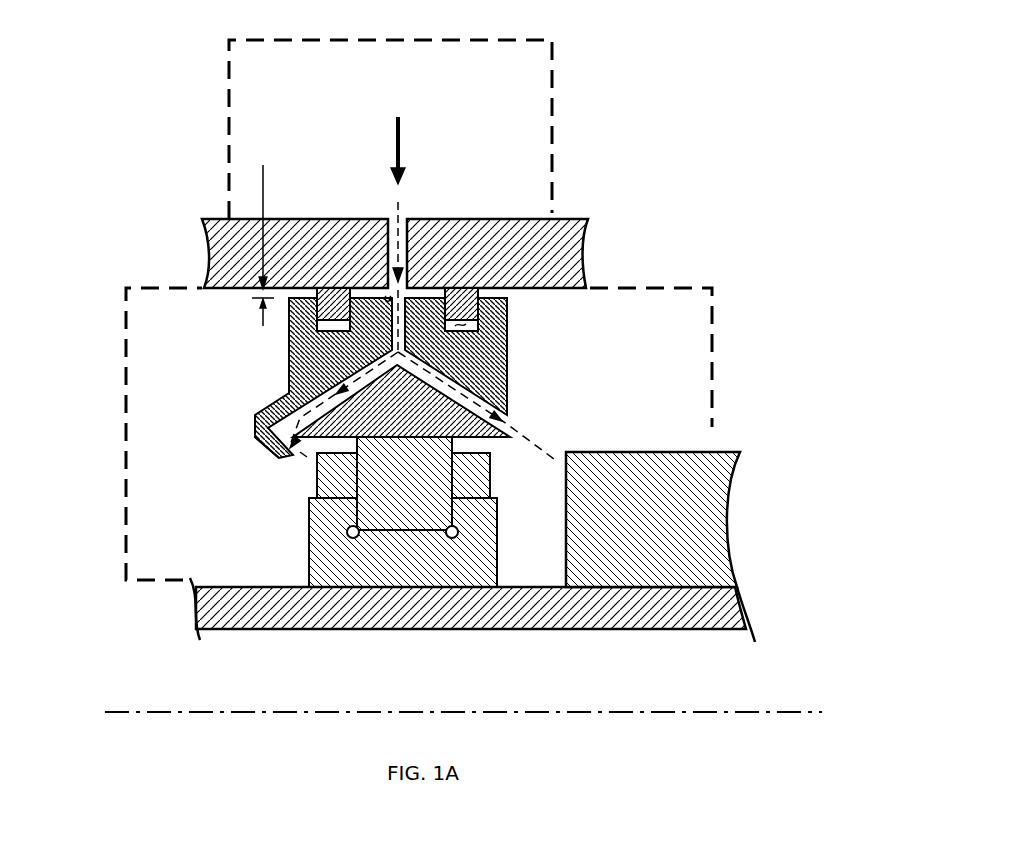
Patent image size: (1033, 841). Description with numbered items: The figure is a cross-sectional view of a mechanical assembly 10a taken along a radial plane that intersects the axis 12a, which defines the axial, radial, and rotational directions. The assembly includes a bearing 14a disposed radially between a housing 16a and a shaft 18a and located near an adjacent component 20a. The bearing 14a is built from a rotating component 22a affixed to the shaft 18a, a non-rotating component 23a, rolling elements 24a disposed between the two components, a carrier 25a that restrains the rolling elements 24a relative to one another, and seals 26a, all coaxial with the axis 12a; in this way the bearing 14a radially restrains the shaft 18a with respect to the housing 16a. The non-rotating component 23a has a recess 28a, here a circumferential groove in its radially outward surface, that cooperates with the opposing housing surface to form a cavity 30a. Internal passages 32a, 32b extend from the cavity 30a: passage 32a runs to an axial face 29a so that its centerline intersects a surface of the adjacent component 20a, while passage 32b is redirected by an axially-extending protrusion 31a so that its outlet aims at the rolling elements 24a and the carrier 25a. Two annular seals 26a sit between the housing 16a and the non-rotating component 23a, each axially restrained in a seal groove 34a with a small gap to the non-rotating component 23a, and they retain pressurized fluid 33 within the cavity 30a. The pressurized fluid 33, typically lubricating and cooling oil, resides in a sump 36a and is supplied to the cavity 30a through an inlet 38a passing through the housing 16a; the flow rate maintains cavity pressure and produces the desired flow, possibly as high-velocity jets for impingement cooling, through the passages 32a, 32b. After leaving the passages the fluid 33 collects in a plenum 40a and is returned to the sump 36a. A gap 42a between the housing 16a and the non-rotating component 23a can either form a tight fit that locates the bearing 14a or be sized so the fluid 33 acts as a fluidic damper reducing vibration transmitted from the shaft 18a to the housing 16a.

The mechanical assembly 10a is at (810, 200).
The axis 12a is at (785, 707).
The bearing 14a is at (423, 321).
The housing 16a is at (222, 218).
The shaft 18a is at (638, 630).
The adjacent component 20a is at (733, 452).
The rotating component 22a is at (300, 547).
The non-rotating component 23a is at (288, 350).
The rolling elements 24a is at (452, 517).
The carrier 25a is at (490, 478).
The seal 26a is at (480, 293).
The recess 28a is at (418, 297).
The axial face 29a is at (507, 408).
The cavity 30a is at (385, 297).
The axially-extending protrusion 31a is at (254, 422).
The passage 32a is at (483, 390).
The passage 32b is at (267, 450).
The pressurized fluid 33 is at (409, 108).
The seal groove 34a is at (466, 336).
The sump 36a is at (553, 108).
The inlet 38a is at (412, 242).
The plenum 40a is at (713, 352).
The gap 42a is at (263, 233).